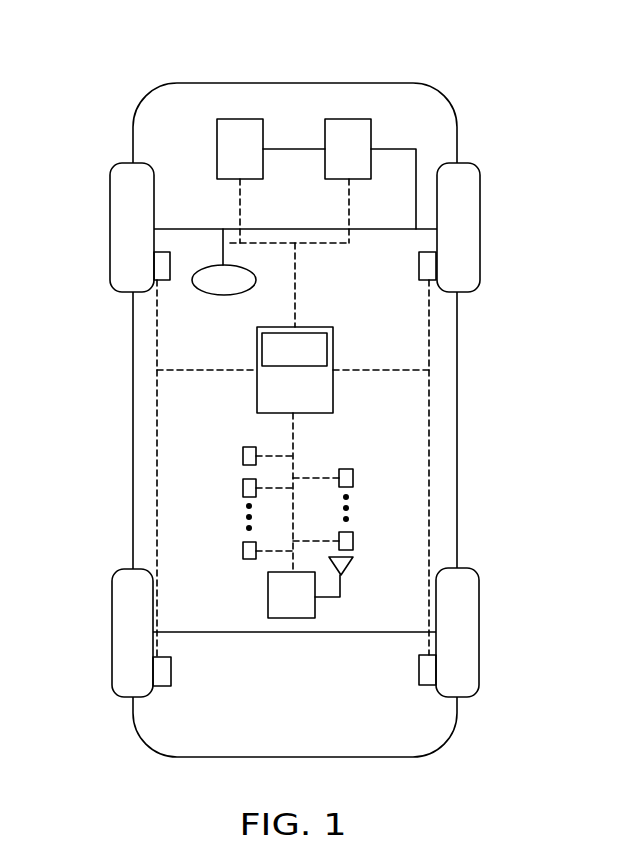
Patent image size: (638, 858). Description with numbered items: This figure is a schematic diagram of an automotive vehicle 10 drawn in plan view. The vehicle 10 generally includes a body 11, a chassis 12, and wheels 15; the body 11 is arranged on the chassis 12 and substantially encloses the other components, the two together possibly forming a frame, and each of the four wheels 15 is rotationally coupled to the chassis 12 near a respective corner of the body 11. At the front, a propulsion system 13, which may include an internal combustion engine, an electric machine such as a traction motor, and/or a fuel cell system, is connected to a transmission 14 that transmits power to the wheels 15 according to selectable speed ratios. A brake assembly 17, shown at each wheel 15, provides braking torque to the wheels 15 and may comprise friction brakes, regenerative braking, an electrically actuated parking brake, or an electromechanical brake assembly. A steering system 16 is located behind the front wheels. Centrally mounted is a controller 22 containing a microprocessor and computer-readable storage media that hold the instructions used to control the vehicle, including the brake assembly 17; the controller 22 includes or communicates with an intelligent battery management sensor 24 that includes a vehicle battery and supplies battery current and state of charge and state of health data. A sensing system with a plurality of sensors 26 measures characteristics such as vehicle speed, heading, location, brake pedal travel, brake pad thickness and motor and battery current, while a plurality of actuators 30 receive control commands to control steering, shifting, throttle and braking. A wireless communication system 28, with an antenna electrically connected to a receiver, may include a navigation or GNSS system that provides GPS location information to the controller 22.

The automotive vehicle 10 is at (122, 83).
The body 11 is at (457, 135).
The chassis 12 is at (300, 633).
The propulsion system 13 is at (217, 150).
The transmission 14 is at (371, 135).
The wheels 15 is at (110, 229).
The steering system 16 is at (223, 296).
The brake assembly 17 is at (170, 267).
The controller 22 is at (333, 385).
The intelligent battery management sensor 24 is at (315, 327).
The sensors 26 is at (243, 456).
The wireless communication system 28 is at (268, 593).
The actuators 30 is at (353, 478).